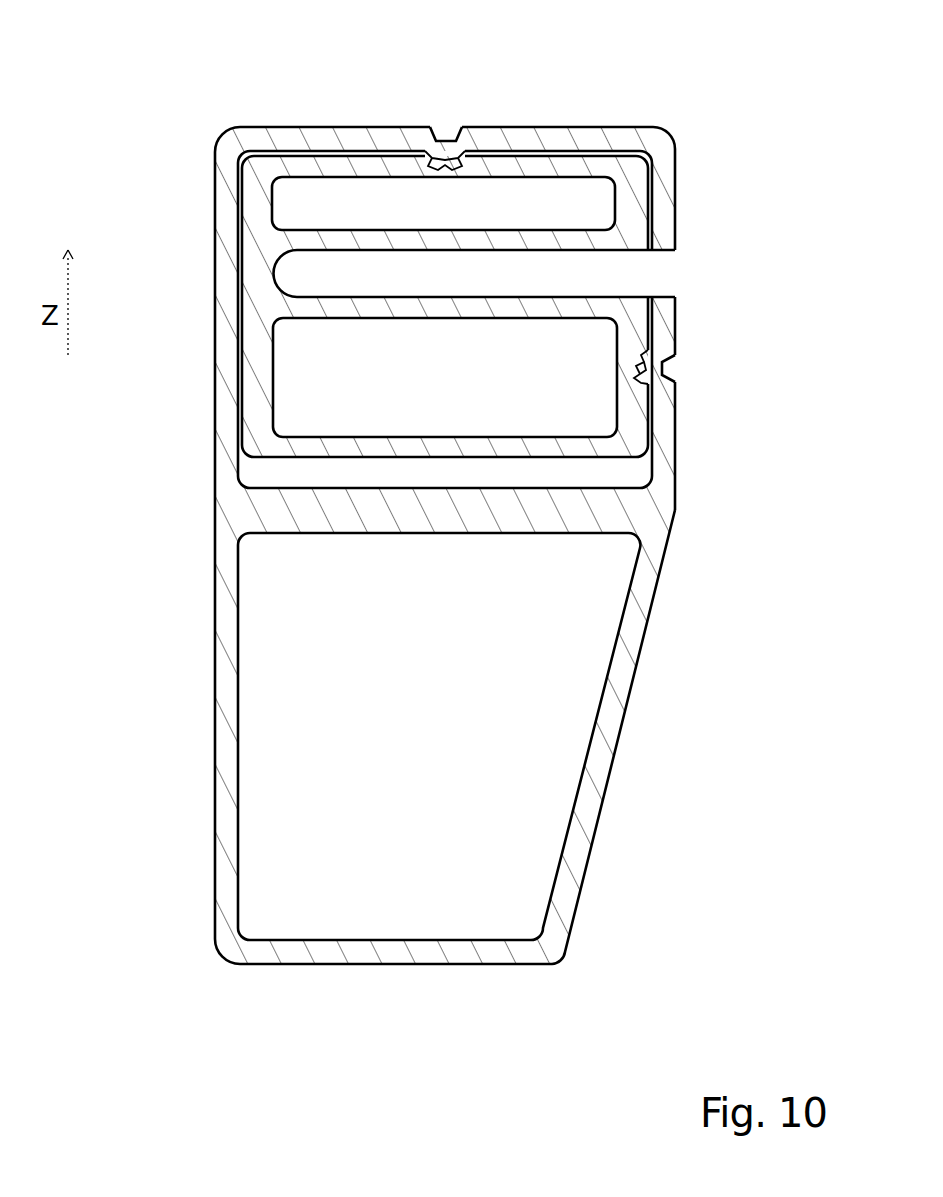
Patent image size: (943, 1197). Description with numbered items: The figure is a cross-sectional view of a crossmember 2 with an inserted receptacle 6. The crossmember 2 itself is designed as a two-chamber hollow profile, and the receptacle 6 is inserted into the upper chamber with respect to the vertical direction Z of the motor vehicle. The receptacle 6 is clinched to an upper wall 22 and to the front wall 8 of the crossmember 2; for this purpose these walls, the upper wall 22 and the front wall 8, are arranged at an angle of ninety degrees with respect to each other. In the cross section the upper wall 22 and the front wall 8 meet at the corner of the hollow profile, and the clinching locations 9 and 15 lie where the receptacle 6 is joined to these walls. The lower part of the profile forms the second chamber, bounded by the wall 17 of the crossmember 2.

The crossmember 2 is at (689, 105).
The receptacle 6 is at (263, 378).
The front wall 8 is at (665, 432).
The recess / notch 9 is at (451, 118).
The latching element 15 is at (447, 177).
The lower wall 17 is at (222, 725).
The upper wall 22 is at (503, 135).